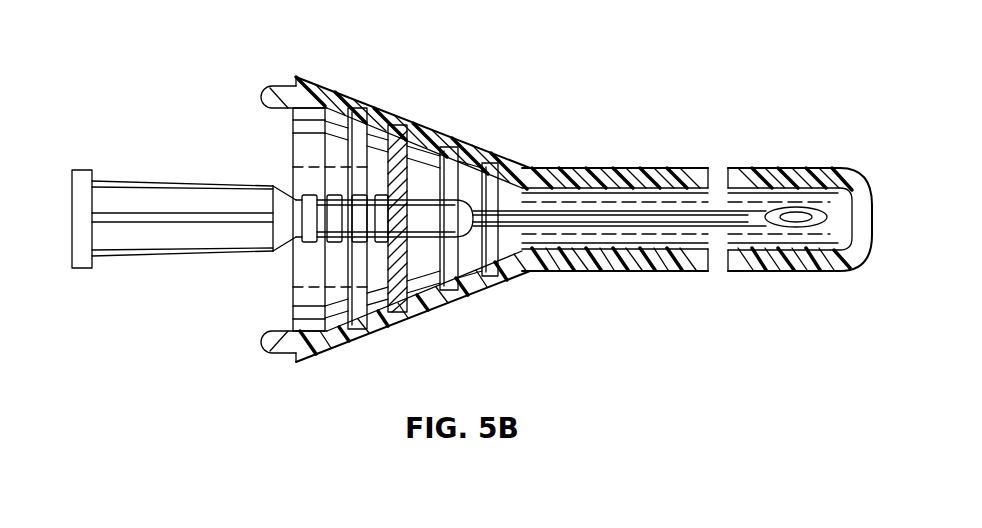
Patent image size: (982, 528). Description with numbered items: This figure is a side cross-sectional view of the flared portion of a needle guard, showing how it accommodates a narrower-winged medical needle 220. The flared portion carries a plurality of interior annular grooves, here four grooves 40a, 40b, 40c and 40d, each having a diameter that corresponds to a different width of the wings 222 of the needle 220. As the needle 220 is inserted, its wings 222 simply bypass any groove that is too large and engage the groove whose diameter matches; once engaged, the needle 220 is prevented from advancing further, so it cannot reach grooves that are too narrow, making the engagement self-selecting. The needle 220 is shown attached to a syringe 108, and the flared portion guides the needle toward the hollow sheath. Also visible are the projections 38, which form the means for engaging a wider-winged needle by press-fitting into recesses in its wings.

The projections 38 is at (264, 95).
The wings 222 is at (332, 163).
The syringe 108 is at (157, 240).
The interior annular groove 40a is at (353, 107).
The interior annular groove 40b is at (396, 123).
The interior annular groove 40c is at (441, 145).
The interior annular groove 40d is at (487, 161).
The medical needle 220 is at (500, 209).